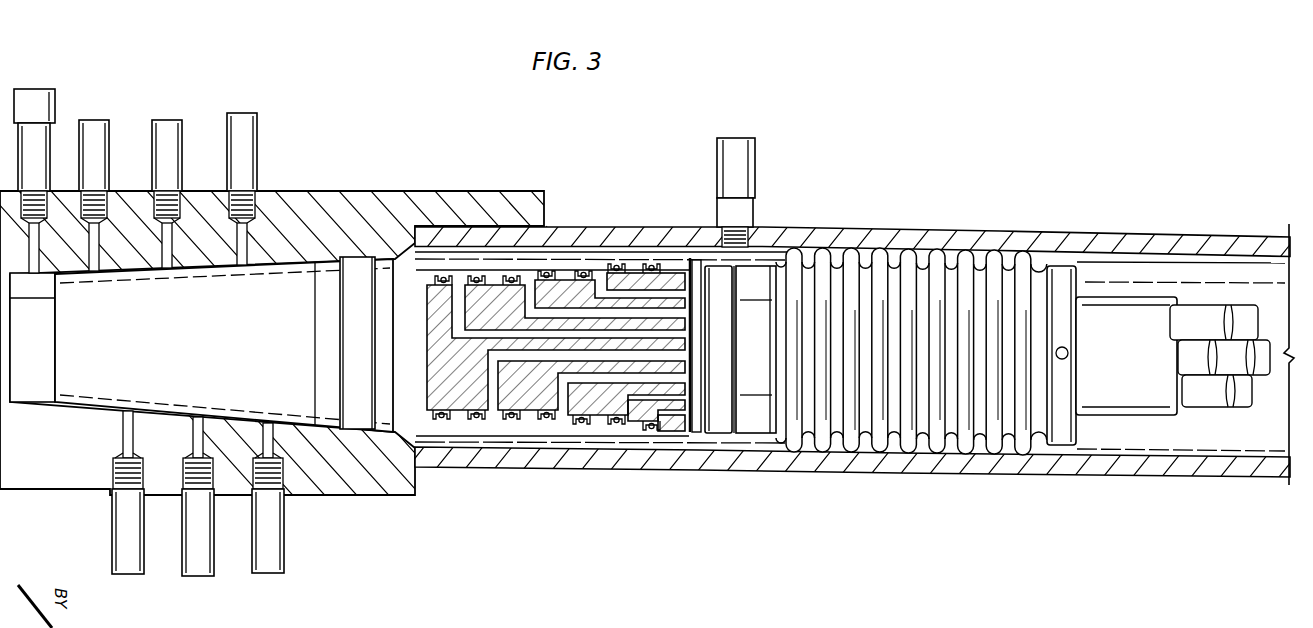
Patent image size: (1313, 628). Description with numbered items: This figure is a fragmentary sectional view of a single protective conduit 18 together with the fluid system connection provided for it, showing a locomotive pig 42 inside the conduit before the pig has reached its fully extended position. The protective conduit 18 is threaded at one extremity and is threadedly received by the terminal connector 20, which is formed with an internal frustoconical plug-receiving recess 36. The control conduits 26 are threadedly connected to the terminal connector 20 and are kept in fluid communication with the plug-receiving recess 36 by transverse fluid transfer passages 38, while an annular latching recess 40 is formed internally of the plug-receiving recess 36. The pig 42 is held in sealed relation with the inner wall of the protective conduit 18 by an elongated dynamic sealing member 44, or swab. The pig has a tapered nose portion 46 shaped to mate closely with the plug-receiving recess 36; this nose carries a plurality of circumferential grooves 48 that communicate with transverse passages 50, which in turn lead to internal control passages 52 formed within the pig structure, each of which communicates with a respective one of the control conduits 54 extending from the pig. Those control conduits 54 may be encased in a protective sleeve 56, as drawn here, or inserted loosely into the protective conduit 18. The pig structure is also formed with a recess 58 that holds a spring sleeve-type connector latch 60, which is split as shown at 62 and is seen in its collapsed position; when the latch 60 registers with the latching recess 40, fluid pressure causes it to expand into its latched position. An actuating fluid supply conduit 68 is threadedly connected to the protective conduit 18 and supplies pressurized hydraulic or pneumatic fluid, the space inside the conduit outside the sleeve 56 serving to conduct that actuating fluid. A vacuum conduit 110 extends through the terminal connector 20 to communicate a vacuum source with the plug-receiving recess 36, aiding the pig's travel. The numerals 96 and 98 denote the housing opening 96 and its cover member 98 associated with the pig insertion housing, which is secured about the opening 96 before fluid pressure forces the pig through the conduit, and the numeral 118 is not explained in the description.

The protective conduit 18 is at (1148, 238).
The terminal connector 20 is at (410, 193).
The control conduits 26 is at (110, 138).
The plug-receiving recess 36 is at (177, 413).
The transverse fluid transfer passages 38 is at (163, 262).
The annular latching recess 40 is at (343, 277).
The locomotive pig 42 is at (738, 266).
The elongated dynamic sealing member 44 is at (940, 250).
The tapered nose portion 46 is at (455, 380).
The circumferential grooves 48 is at (598, 427).
The transverse passages 50 is at (598, 277).
The internal control passages 52 is at (690, 262).
The control conduits 54 is at (1238, 394).
The protective sleeve 56 is at (1135, 406).
The recess 58 is at (700, 438).
The connector latch 60 is at (722, 436).
The split 62 is at (707, 356).
The actuating fluid supply conduit 68 is at (757, 170).
The opening 96 is at (719, 623).
The cover member 98 is at (823, 618).
The vacuum conduit 110 is at (43, 97).
The connector body 118 is at (41, 148).